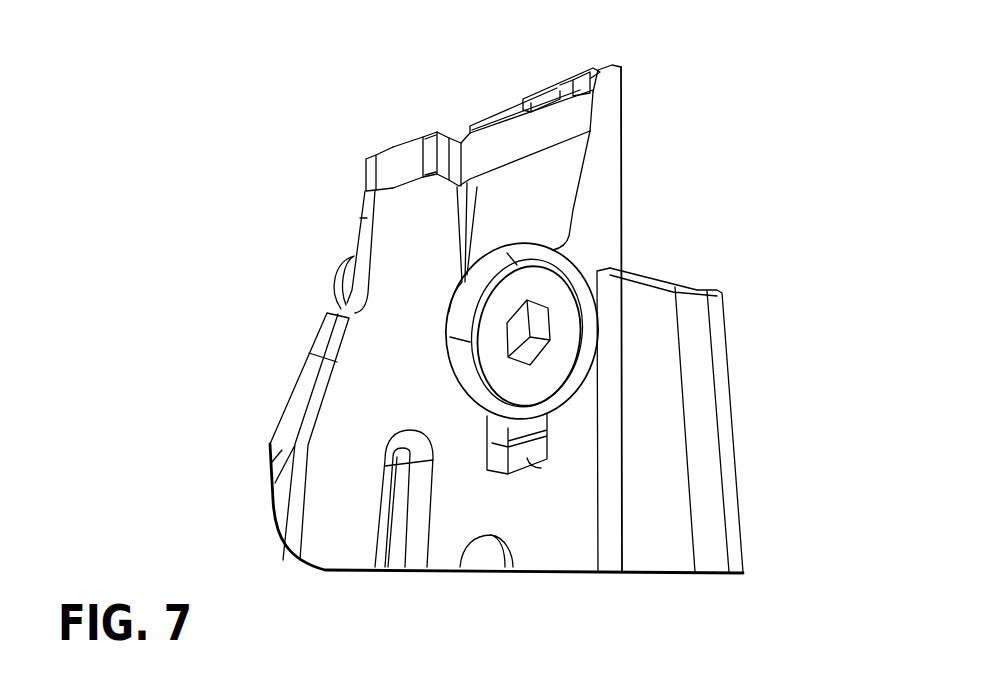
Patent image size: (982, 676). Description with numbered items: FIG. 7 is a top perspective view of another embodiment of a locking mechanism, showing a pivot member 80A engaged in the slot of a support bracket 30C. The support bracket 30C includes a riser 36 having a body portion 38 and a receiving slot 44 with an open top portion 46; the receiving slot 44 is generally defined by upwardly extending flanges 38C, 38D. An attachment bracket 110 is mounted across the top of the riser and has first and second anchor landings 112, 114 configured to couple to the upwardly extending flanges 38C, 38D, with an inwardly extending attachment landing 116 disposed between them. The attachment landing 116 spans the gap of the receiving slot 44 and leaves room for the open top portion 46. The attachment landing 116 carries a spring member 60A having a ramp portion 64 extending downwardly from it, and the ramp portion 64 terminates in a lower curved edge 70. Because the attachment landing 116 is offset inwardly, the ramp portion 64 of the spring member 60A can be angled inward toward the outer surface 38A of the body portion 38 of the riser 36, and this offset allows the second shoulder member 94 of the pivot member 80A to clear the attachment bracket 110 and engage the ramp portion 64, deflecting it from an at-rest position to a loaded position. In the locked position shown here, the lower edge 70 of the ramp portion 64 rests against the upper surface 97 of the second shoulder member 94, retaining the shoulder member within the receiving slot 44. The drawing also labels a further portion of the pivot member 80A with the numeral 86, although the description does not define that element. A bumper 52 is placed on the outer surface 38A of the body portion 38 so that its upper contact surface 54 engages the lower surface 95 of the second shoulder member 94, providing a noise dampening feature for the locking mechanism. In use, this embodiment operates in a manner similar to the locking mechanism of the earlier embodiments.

The support bracket 30C is at (725, 153).
The riser 36 is at (310, 288).
The body portion 38 is at (360, 369).
The outer surface 38A is at (420, 313).
The upwardly extending flange 38C is at (398, 207).
The upwardly extending flange 38D is at (608, 100).
The receiving slot 44 is at (480, 196).
The open top portion 46 is at (477, 123).
The bumper 52 is at (547, 472).
The upper contact surface 54 is at (547, 436).
The spring member 60A is at (585, 211).
The ramp portion 64 is at (548, 165).
The lower curved edge 70 is at (527, 235).
The pivot member 80A is at (608, 358).
The stop 86 is at (610, 293).
The second shoulder member 94 is at (563, 393).
The lower surface 95 is at (483, 410).
The upper surface 97 is at (512, 265).
The attachment bracket 110 is at (497, 112).
The first anchor landing 112 is at (405, 150).
The second anchor landing 114 is at (582, 82).
The attachment landing 116 is at (470, 148).